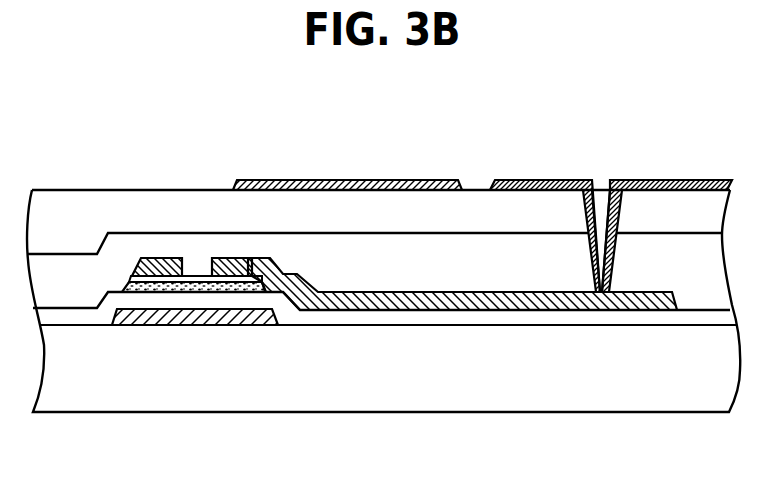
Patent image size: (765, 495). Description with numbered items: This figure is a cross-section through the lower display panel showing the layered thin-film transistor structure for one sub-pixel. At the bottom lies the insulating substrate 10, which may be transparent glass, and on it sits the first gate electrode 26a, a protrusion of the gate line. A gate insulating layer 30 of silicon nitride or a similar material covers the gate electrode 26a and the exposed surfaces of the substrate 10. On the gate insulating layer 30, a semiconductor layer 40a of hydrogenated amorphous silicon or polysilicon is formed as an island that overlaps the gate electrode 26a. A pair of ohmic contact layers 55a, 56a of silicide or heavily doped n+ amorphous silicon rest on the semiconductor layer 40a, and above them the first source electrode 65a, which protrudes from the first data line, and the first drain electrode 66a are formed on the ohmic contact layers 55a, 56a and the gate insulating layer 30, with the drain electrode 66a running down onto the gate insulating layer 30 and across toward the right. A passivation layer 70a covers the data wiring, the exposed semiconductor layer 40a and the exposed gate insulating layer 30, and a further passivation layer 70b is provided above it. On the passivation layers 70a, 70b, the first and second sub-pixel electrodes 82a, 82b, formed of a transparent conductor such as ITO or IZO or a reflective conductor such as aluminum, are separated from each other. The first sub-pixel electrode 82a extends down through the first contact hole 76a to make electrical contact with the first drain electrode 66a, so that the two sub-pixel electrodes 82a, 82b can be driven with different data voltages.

The insulating substrate 10 is at (629, 398).
The first gate electrode 26a is at (209, 316).
The gate insulating layer 30 is at (550, 317).
The semiconductor layer 40a is at (153, 288).
The ohmic contact layer 55a is at (171, 280).
The ohmic contact layer 56a is at (238, 272).
The first source electrode 65a is at (155, 276).
The first drain electrode 66a is at (344, 302).
The passivation layer 70a is at (413, 278).
The passivation layer 70b is at (489, 217).
The first contact hole 76a is at (600, 180).
The first sub-pixel electrode 82a is at (540, 180).
The second sub-pixel electrode 82b is at (387, 180).